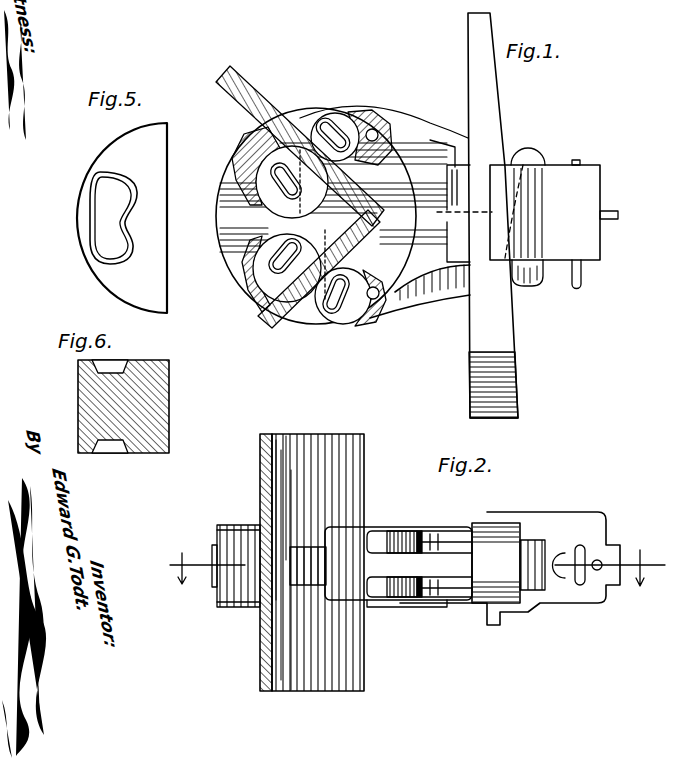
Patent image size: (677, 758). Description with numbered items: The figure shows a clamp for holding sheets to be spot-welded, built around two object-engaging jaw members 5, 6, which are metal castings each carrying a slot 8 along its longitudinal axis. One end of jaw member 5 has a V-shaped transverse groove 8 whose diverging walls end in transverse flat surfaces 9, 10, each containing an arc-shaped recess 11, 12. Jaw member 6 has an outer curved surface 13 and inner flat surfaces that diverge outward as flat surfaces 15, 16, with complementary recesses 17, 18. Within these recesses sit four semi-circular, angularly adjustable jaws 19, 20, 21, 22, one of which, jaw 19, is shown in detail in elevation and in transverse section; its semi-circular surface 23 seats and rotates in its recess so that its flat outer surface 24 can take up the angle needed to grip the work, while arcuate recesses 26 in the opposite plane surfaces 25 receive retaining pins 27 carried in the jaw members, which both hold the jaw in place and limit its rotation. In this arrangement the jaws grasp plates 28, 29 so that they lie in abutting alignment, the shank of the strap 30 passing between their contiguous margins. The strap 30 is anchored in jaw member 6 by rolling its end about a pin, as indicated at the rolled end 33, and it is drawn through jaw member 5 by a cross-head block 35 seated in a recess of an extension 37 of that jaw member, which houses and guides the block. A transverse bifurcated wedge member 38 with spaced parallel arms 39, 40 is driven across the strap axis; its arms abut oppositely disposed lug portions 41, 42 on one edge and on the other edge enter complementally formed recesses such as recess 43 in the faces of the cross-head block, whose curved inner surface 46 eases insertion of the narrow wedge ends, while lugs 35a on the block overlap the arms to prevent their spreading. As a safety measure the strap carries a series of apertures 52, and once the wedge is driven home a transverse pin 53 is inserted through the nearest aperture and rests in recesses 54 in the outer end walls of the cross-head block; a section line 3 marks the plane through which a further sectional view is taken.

In FIG. 1, the section line 3 is at (375, 172).
In FIG. 2, the section line 3 is at (410, 568).
In FIG. 1, the jaw member 5 is at (390, 150).
In FIG. 2, the jaw member 5 is at (394, 530).
In FIG. 1, the jaw member 6 is at (222, 246).
In FIG. 2, the jaw member 6 is at (240, 540).
In FIG. 1, the slot / V-shaped transverse groove 8 is at (370, 185).
In FIG. 1, the flat surface 9 is at (322, 122).
In FIG. 1, the flat surface 10 is at (310, 300).
In FIG. 2, the flat surface 10 is at (326, 570).
In FIG. 1, the recess 11 is at (373, 118).
In FIG. 1, the recess 12 is at (362, 322).
In FIG. 1, the outer curved surface 13 is at (246, 182).
In FIG. 2, the outer curved surface 13 is at (217, 596).
In FIG. 1, the flat surface 15 is at (275, 112).
In FIG. 1, the flat surface 16 is at (262, 290).
In FIG. 1, the recess 17 is at (244, 150).
In FIG. 1, the recess 18 is at (258, 270).
In FIG. 5, the angularly adjustable jaw 19 is at (158, 172).
In FIG. 6, the angularly adjustable jaw 19 is at (156, 420).
In FIG. 1, the angularly adjustable jaw 19 is at (294, 118).
In FIG. 1, the angularly adjustable jaw 20 is at (310, 300).
In FIG. 2, the angularly adjustable jaw 20 is at (318, 560).
In FIG. 1, the angularly adjustable jaw 21 is at (248, 170).
In FIG. 1, the angularly adjustable jaw 22 is at (256, 280).
In FIG. 5, the semi-circular surface 23 is at (80, 203).
In FIG. 6, the semi-circular surface 23 is at (80, 392).
In FIG. 1, the semi-circular surface 23 is at (370, 150).
In FIG. 2, the semi-circular surface 23 is at (312, 588).
In FIG. 6, the flat outer surface 24 is at (168, 396).
In FIG. 1, the flat outer surface 24 is at (200, 284).
In FIG. 2, the flat outer surface 24 is at (290, 568).
In FIG. 5, the plane surface 25 is at (112, 280).
In FIG. 6, the plane surface 25 is at (152, 364).
In FIG. 1, the plane surface 25 is at (300, 302).
In FIG. 2, the plane surface 25 is at (312, 560).
In FIG. 5, the arcuate recess 26 is at (103, 236).
In FIG. 6, the arcuate recess 26 is at (112, 370).
In FIG. 1, the arcuate recess 26 is at (332, 328).
In FIG. 1, the retaining pin 27 is at (340, 116).
In FIG. 1, the plate 28 is at (228, 80).
In FIG. 1, the plate 29 is at (266, 316).
In FIG. 2, the plate 29 is at (268, 478).
In FIG. 1, the strap 30 is at (612, 211).
In FIG. 2, the strap 30 is at (612, 546).
In FIG. 1, the rolled strap end 33 is at (214, 220).
In FIG. 2, the rolled strap end 33 is at (212, 556).
In FIG. 1, the cross-head block 35 is at (562, 166).
In FIG. 2, the cross-head block 35 is at (528, 528).
In FIG. 1, the lug 35a is at (498, 244).
In FIG. 2, the lug 35a is at (496, 520).
In FIG. 1, the extension 37 is at (514, 150).
In FIG. 2, the extension 37 is at (540, 540).
In FIG. 1, the bifurcated wedge member 38 is at (504, 418).
In FIG. 2, the bifurcated wedge member 38 is at (482, 535).
In FIG. 1, the wedge arm 39 is at (490, 258).
In FIG. 2, the wedge arm 39 is at (500, 525).
In FIG. 2, the wedge arm 40 is at (498, 612).
In FIG. 1, the lug portion 41 is at (456, 290).
In FIG. 2, the lug portion 41 is at (454, 530).
In FIG. 2, the lug portion 42 is at (458, 600).
In FIG. 1, the recess 43 is at (464, 214).
In FIG. 1, the curved inner surface 46 is at (522, 160).
In FIG. 2, the aperture 52 is at (600, 570).
In FIG. 1, the transverse pin 53 is at (582, 278).
In FIG. 2, the transverse pin 53 is at (580, 586).
In FIG. 2, the recess 54 is at (566, 552).